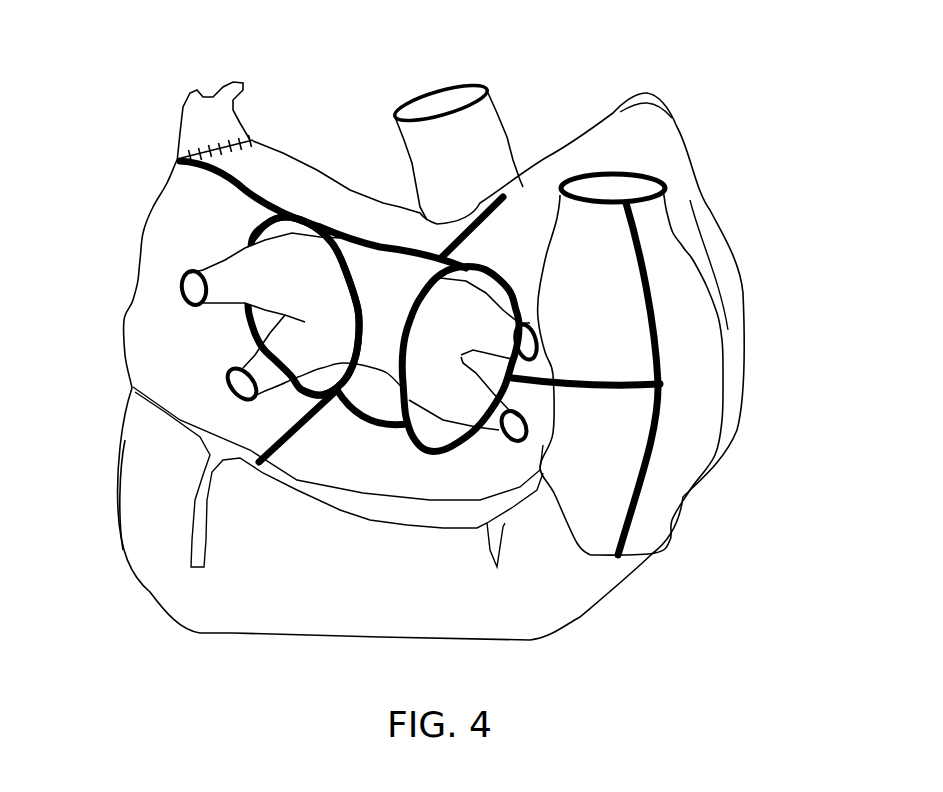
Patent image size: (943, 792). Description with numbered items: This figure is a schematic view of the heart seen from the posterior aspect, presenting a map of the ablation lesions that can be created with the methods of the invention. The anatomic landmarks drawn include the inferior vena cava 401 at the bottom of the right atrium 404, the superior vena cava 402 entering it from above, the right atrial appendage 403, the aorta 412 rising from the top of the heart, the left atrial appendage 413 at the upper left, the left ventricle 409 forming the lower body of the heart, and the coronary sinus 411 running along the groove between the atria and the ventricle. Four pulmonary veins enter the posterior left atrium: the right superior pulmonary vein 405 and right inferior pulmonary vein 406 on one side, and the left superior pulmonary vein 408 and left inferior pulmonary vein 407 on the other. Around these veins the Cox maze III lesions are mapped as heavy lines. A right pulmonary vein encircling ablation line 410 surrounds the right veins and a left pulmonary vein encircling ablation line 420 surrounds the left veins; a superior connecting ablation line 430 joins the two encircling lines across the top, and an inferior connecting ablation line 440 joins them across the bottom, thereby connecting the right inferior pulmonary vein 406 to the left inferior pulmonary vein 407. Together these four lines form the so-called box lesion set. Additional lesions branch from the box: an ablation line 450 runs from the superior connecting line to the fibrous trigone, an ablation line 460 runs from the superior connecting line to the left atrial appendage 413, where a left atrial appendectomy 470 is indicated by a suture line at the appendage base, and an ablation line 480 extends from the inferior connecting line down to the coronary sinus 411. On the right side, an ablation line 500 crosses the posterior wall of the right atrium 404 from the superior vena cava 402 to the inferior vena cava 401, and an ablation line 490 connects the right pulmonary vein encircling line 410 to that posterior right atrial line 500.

The inferior vena cava 401 is at (604, 564).
The superior vena cava 402 is at (641, 187).
The right atrial appendage 403 is at (653, 120).
The right atrium 404 is at (716, 228).
The right superior pulmonary vein 405 is at (532, 343).
The right inferior pulmonary vein 406 is at (529, 437).
The left inferior pulmonary vein 407 is at (218, 384).
The left superior pulmonary vein 408 is at (207, 262).
The left ventricle 409 is at (223, 612).
The right pulmonary vein encircling ablation line 410 is at (444, 346).
The coronary sinus 411 is at (409, 518).
The aorta 412 is at (461, 70).
The left atrial appendage 413 is at (205, 107).
The left pulmonary vein encircling ablation line 420 is at (348, 311).
The superior connecting ablation line 430 is at (398, 243).
The inferior connecting ablation line 440 is at (380, 427).
The ablation line connecting the superior ablation line to the fibrous trigone 450 is at (467, 227).
The ablation line connecting the superior ablation line to the left atrial appendage 460 is at (236, 184).
The left atrial appendectomy 470 is at (207, 150).
The ablation line extending from the inferior connecting ablation line to the corona 480 is at (307, 423).
The ablation line connecting the right pulmonary vein encircling line to the right a 490 is at (597, 380).
The ablation line in the posterior wall of the right atrium connecting the superior 500 is at (658, 347).